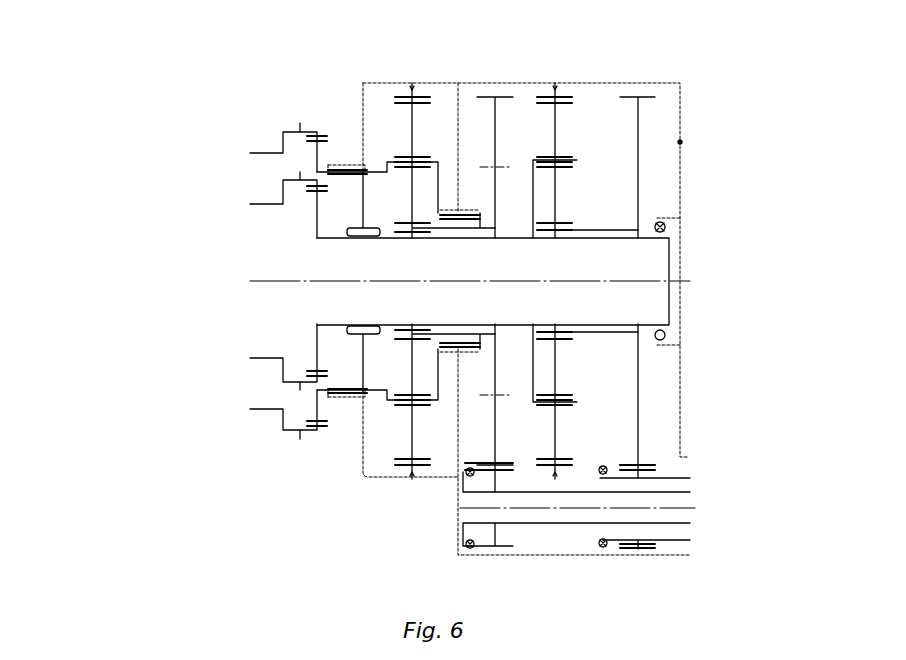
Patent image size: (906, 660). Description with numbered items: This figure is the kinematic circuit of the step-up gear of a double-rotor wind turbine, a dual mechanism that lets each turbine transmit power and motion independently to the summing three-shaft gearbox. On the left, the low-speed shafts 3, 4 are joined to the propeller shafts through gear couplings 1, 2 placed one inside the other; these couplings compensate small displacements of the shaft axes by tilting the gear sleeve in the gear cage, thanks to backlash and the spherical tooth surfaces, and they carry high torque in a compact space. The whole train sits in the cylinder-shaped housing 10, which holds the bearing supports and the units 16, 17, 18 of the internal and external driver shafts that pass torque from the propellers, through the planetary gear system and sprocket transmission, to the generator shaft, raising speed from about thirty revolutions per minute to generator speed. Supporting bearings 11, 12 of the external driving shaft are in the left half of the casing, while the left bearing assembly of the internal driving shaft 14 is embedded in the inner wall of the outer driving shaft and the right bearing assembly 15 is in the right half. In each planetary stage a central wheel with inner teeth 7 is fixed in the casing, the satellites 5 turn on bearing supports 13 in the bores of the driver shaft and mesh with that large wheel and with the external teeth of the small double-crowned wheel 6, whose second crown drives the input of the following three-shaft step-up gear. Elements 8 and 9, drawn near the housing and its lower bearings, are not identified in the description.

The gear coupling 1 is at (250, 153).
The gear coupling 2 is at (267, 204).
The low-speed shaft 3 is at (330, 238).
The low-speed shaft 4 is at (325, 172).
The satellites 5 is at (420, 158).
The small double-crowned wheel 6 is at (490, 228).
The central wheel with inner teeth 7 is at (411, 150).
The output shaft 8 is at (568, 492).
The housing 9 is at (603, 472).
The cylinder-shaped housing 10 is at (680, 142).
The supporting bearing 11 is at (352, 168).
The supporting bearing 12 is at (460, 213).
The bearing supports 13 is at (412, 88).
The left bearing assembly of the internal driving shaft 14 is at (316, 172).
The right bearing assembly 15 is at (664, 223).
The driver shaft unit 16 is at (597, 233).
The driver shaft unit 17 is at (466, 474).
The driver shaft unit 18 is at (664, 332).